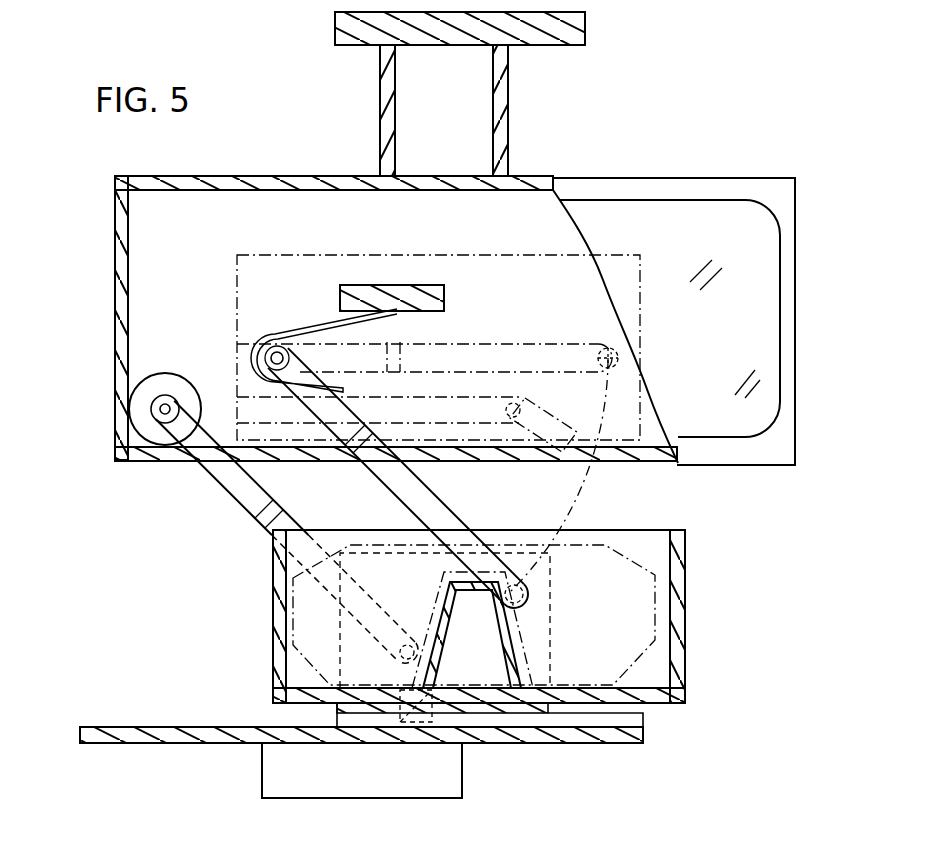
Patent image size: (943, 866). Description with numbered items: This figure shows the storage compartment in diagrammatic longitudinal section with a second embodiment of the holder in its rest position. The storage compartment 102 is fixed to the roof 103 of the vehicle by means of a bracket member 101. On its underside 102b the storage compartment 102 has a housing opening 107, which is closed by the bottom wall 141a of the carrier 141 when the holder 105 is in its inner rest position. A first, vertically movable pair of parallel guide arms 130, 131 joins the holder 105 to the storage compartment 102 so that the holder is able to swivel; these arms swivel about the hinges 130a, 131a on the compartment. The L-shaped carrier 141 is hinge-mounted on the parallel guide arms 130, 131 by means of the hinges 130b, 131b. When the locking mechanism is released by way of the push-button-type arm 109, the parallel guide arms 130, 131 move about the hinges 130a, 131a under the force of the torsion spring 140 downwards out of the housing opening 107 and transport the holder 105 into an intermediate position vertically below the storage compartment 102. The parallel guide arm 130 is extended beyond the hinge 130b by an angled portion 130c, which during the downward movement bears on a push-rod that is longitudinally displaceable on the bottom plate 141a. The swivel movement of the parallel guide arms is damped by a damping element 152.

The bracket member 101 is at (508, 118).
The storage compartment 102 is at (312, 184).
The underside of the storage compartment 102b is at (150, 460).
The roof 103 is at (556, 45).
The holder 105 is at (686, 700).
The housing opening 107 is at (484, 458).
The push-button-type arm 109 is at (462, 775).
The parallel guide arm 130 is at (465, 410).
The hinge 130a is at (165, 385).
The hinge 130b is at (515, 410).
The angled portion 130c is at (577, 428).
The parallel guide arm 131 is at (375, 480).
The hinge 131a is at (262, 350).
The hinge 131b is at (518, 596).
The torsion spring 140 is at (328, 318).
The carrier 141 is at (552, 632).
The bottom wall of the carrier 141a is at (572, 745).
The damping element 152 is at (140, 413).